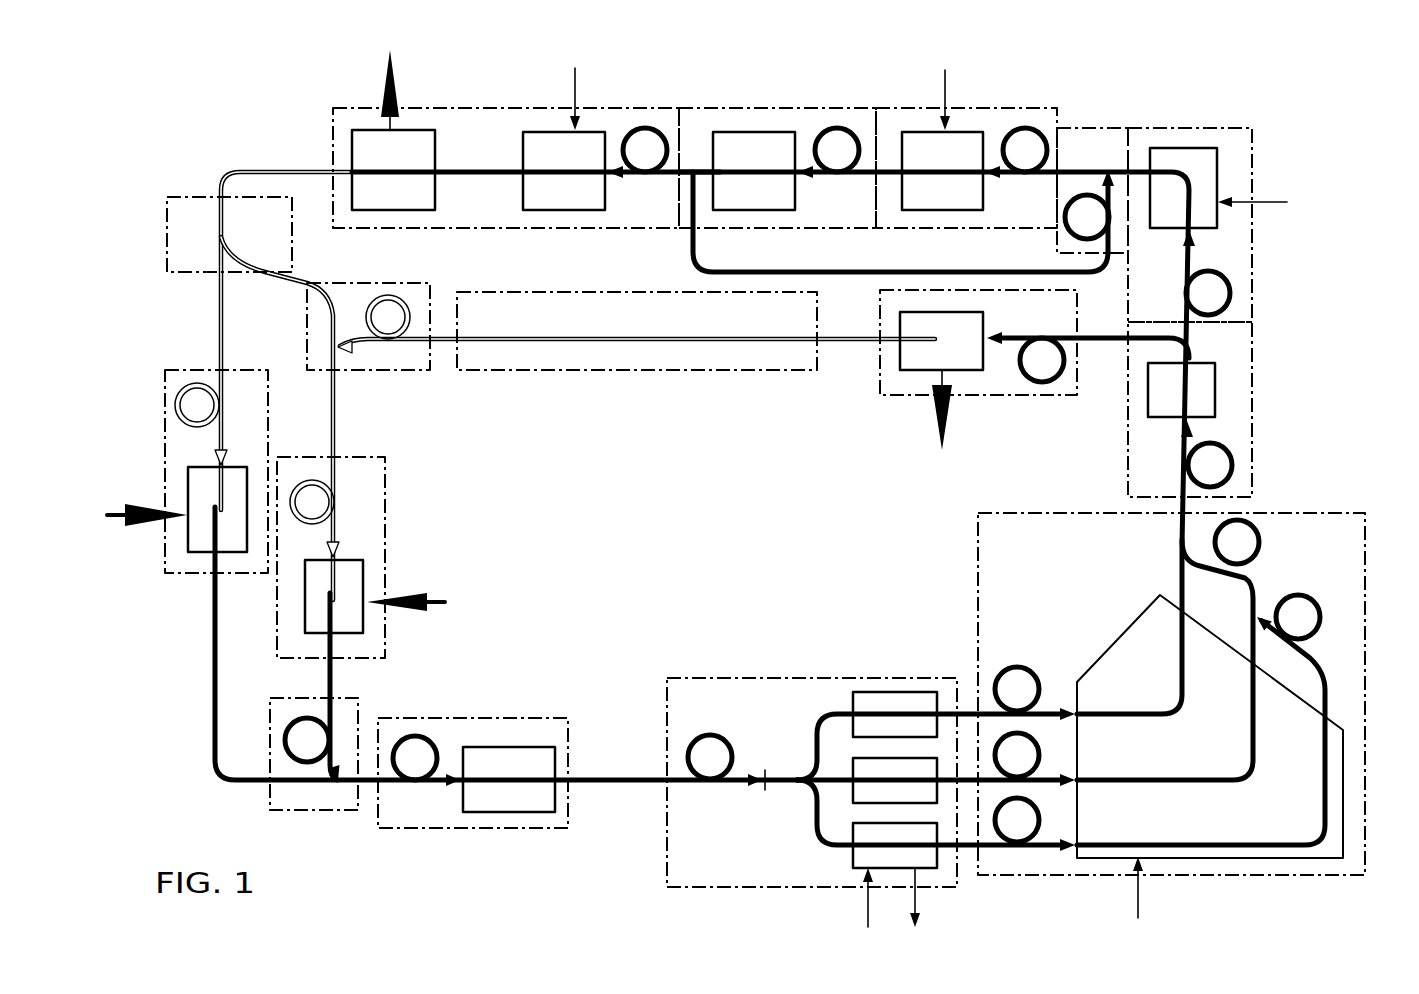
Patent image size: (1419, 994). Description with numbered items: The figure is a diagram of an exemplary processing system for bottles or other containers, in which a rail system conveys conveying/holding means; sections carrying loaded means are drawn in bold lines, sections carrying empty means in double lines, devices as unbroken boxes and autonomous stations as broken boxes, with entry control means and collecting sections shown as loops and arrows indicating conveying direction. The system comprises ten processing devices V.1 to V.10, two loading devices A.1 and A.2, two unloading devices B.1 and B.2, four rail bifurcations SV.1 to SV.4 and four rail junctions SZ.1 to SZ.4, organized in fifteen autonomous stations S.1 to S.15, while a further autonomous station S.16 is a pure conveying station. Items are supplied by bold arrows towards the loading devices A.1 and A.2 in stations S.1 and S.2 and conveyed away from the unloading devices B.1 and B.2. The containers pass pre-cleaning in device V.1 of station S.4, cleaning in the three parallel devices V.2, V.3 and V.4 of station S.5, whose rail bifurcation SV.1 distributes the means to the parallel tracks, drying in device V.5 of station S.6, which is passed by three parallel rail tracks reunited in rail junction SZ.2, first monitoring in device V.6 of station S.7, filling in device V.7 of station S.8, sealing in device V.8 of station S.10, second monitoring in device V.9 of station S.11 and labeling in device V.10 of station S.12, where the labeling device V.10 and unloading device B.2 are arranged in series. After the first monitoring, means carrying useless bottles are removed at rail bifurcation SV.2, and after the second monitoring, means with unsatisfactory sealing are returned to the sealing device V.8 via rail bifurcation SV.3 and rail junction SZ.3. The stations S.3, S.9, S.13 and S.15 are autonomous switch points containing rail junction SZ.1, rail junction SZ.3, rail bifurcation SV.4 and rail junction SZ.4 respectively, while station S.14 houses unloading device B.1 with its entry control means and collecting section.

The autonomous station S.1 is at (165, 465).
The autonomous station S.2 is at (385, 638).
The autonomous station S.3 is at (358, 706).
The autonomous station S.4 is at (533, 718).
The autonomous station S.5 is at (695, 678).
The autonomous station S.6 is at (978, 542).
The autonomous station S.7 is at (1253, 447).
The autonomous station S.8 is at (1253, 247).
The autonomous station S.9 is at (1077, 128).
The autonomous station S.10 is at (970, 108).
The autonomous station S.11 is at (815, 108).
The autonomous station S.12 is at (440, 108).
The autonomous station S.13 is at (183, 197).
The autonomous station S.14 is at (990, 395).
The autonomous station S.15 is at (403, 283).
The autonomous station S.16 is at (632, 372).
The processing device V.1 is at (500, 812).
The processing device V.2 is at (867, 692).
The processing device V.3 is at (910, 758).
The processing device V.4 is at (855, 868).
The processing device V.5 is at (1107, 650).
The monitoring device V.6 is at (1215, 387).
The processing device V.7 is at (1218, 173).
The sealing device V.8 is at (912, 132).
The monitoring device V.9 is at (747, 132).
The processing device V.10 is at (545, 132).
The loading device A.1 is at (200, 553).
The loading device A.2 is at (365, 572).
The unloading device B.1 is at (917, 372).
The unloading device B.2 is at (352, 140).
The rail bifurcation SV.1 is at (788, 797).
The rail bifurcation SV.2 is at (1210, 347).
The rail bifurcation SV.3 is at (697, 158).
The rail bifurcation SV.4 is at (205, 235).
The rail junction SZ.1 is at (338, 803).
The rail junction SZ.2 is at (1283, 574).
The rail junction SZ.3 is at (1107, 158).
The rail junction SZ.4 is at (348, 364).